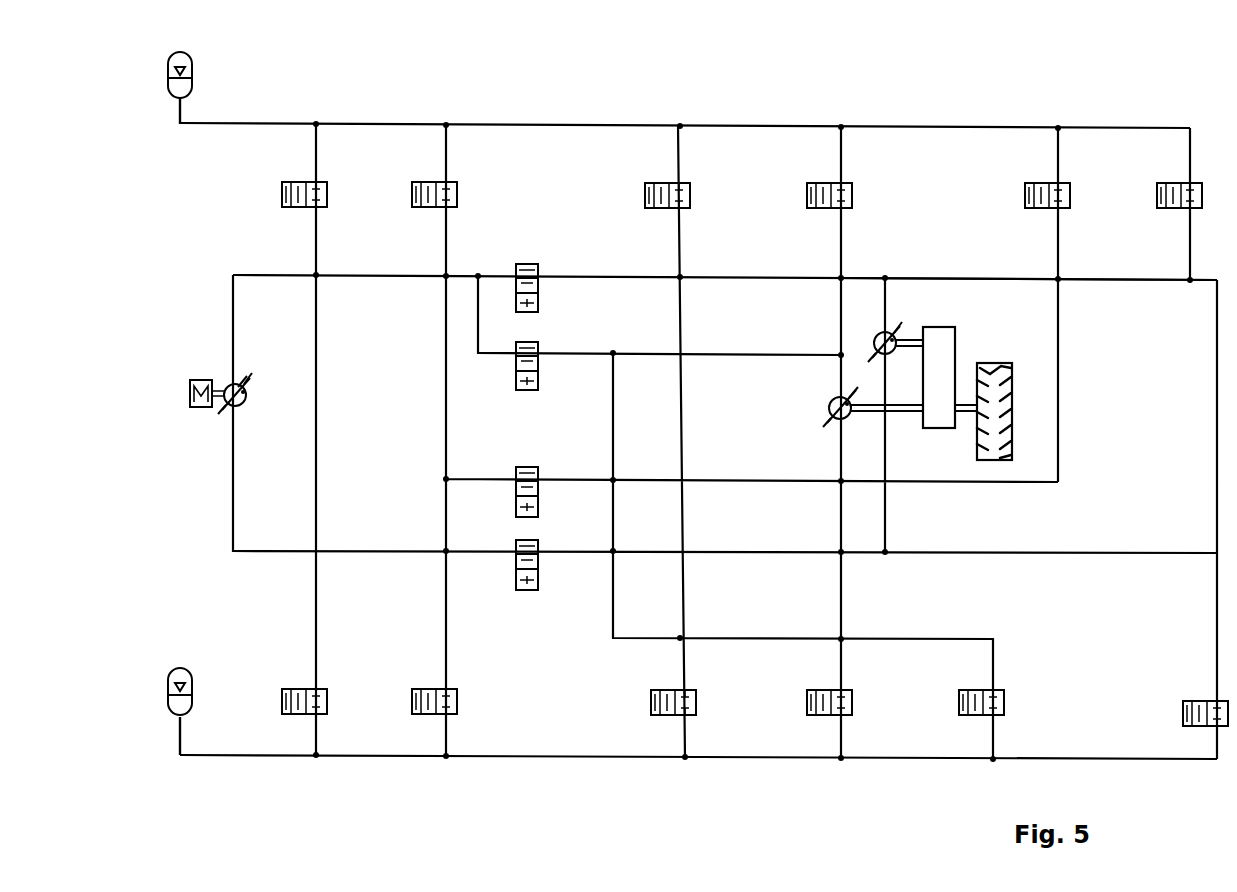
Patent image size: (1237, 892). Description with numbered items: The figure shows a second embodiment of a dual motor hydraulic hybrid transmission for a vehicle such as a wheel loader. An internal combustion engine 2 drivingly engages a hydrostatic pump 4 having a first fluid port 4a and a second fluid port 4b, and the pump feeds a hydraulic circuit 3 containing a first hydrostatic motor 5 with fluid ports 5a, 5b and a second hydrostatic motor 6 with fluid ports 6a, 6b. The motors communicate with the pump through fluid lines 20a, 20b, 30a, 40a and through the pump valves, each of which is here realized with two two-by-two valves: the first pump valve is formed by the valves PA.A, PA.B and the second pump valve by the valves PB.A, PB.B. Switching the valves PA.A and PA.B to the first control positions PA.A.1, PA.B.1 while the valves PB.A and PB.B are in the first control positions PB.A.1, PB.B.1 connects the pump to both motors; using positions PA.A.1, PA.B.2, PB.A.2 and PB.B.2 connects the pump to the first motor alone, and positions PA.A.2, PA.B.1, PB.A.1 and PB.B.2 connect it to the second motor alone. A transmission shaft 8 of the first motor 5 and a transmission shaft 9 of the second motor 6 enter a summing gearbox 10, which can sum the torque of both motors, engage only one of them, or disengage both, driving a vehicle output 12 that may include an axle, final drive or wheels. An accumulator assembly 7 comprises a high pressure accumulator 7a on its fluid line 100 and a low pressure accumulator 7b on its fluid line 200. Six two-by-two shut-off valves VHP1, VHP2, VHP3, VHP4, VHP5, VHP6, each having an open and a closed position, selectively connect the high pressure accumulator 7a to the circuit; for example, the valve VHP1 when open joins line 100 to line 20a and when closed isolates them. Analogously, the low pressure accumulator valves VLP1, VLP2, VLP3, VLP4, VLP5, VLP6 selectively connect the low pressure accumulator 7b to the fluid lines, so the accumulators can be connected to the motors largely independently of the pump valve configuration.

The internal combustion engine 2 is at (199, 378).
The hydraulic circuit 3 is at (181, 522).
The hydrostatic pump 4 is at (255, 399).
The first fluid port 4a is at (255, 367).
The second fluid port 4b is at (242, 417).
The first hydrostatic motor 5 is at (866, 345).
The first fluid port 5a is at (878, 332).
The second fluid port 5b is at (865, 365).
The second hydrostatic motor 6 is at (822, 412).
The first fluid port 6a is at (835, 395).
The second fluid port 6b is at (831, 430).
The accumulator assembly 7 is at (154, 90).
The high pressure accumulator 7a is at (192, 62).
The low pressure accumulator 7b is at (183, 680).
The transmission shaft 8 is at (909, 333).
The transmission shaft 9 is at (910, 410).
The summing gearbox 10 is at (945, 428).
The vehicle output 12 is at (1014, 410).
The fluid line 20a is at (402, 275).
The fluid line 20b is at (233, 496).
The fluid line 30a is at (1001, 280).
The fluid line 40a is at (725, 355).
The fluid line 100 is at (577, 124).
The fluid line 200 is at (580, 759).
The 2/2-way shut-off valve VHP1 is at (271, 193).
The 2/2-way shut-off valve VHP2 is at (459, 191).
The 2/2-way shut-off valve VHP3 is at (641, 195).
The 2/2-way shut-off valve VHP4 is at (855, 196).
The 2/2-way shut-off valve VHP5 is at (1019, 197).
The 2/2-way shut-off valve VHP6 is at (1153, 198).
The low pressure accumulator valve VLP1 is at (329, 700).
The low pressure accumulator valve VLP2 is at (459, 701).
The low pressure accumulator valve VLP3 is at (854, 704).
The low pressure accumulator valve VLP4 is at (648, 707).
The low pressure accumulator valve VLP5 is at (1000, 721).
The low pressure accumulator valve VLP6 is at (1182, 710).
The first pump valve PA.A is at (553, 294).
The first control position PA.A.1 is at (530, 264).
The second control position PA.A.2 is at (538, 310).
The first pump valve PA.B is at (500, 387).
The first control position PA.B.1 is at (538, 360).
The second control position PA.B.2 is at (538, 386).
The second pump valve PB.A is at (503, 511).
The first control position PB.A.1 is at (538, 477).
The second control position PB.A.2 is at (538, 507).
The second pump valve PB.B is at (501, 577).
The first control position PB.B.1 is at (538, 550).
The second control position PB.B.2 is at (538, 585).